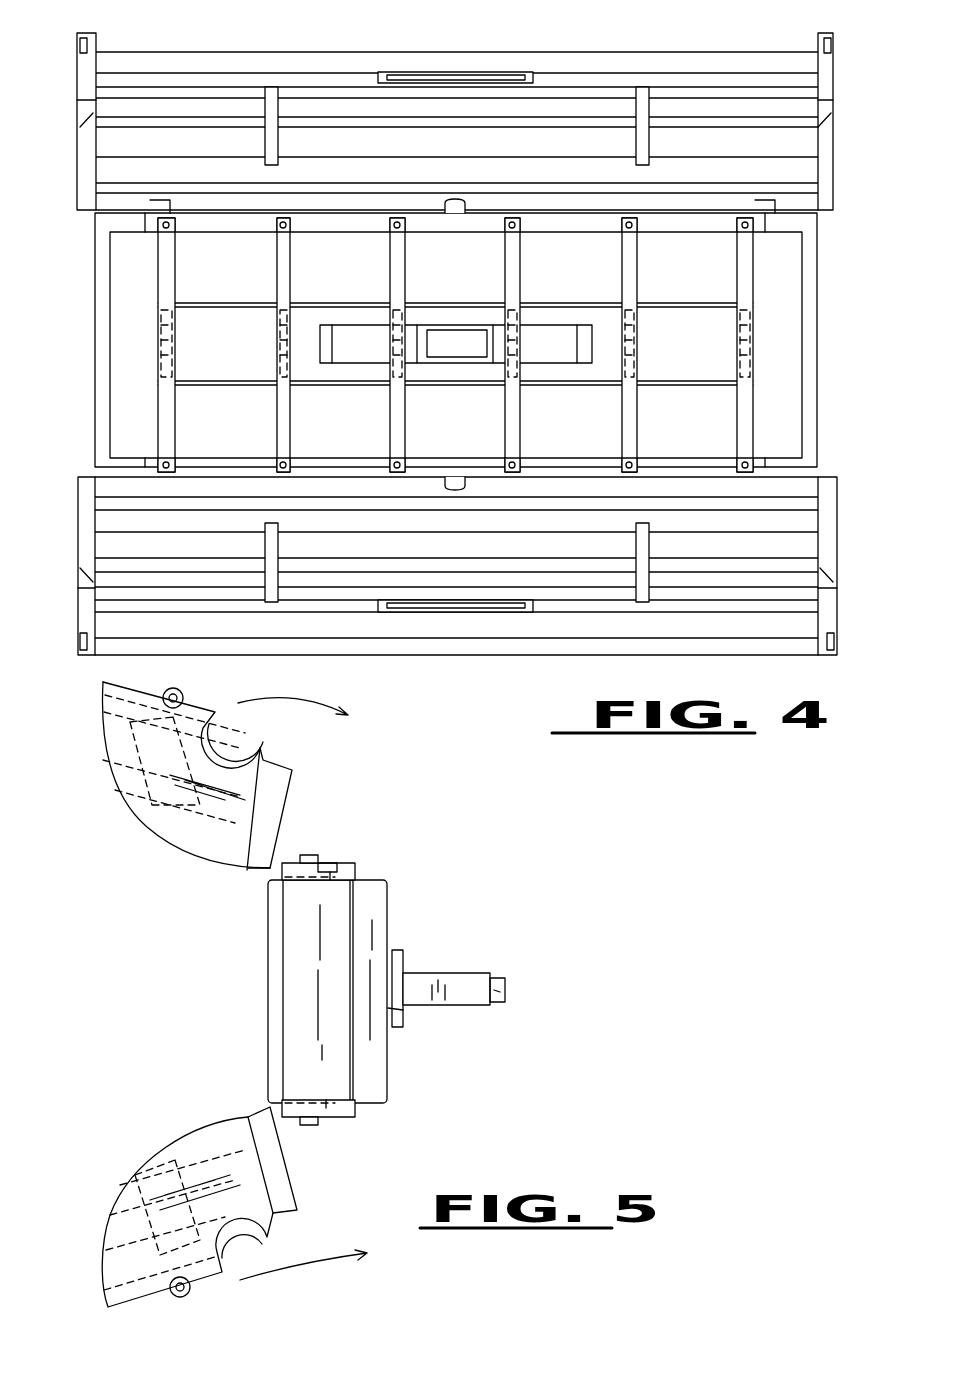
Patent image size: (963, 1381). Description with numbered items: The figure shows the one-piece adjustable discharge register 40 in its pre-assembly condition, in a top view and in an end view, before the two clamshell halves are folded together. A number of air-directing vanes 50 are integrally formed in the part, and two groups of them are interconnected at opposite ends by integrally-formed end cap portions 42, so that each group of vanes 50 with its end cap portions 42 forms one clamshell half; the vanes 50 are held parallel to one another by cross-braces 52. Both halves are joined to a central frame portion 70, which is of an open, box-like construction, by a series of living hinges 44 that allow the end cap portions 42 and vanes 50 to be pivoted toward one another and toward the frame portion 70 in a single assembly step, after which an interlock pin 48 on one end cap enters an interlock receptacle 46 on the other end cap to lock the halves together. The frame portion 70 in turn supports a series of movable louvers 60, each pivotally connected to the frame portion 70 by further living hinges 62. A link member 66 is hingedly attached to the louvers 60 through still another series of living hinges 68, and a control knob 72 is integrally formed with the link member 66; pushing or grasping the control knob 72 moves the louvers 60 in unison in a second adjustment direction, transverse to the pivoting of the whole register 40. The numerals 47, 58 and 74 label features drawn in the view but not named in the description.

In FIG. 4, the one-piece adjustable discharge register 40 is at (451, 343).
In FIG. 4, the end cap portion 42 is at (451, 343).
In FIG. 5, the end cap portion 42 is at (166, 799).
In FIG. 4, the living hinge 44 is at (125, 208).
In FIG. 5, the living hinge 44 is at (290, 862).
In FIG. 5, the interlock receptacle 46 is at (183, 695).
In FIG. 4, the end post 47 is at (835, 170).
In FIG. 5, the interlock pin 48 is at (190, 1288).
In FIG. 4, the air-directing vane 50 is at (540, 75).
In FIG. 5, the air-directing vane 50 is at (103, 706).
In FIG. 4, the cross-brace 52 is at (265, 150).
In FIG. 5, the cross-brace 52 is at (130, 742).
In FIG. 4, the handle bracket 58 is at (400, 72).
In FIG. 4, the movable louver 60 is at (160, 272).
In FIG. 5, the movable louver 60 is at (370, 900).
In FIG. 4, the living hinge 62 is at (277, 232).
In FIG. 5, the living hinge 62 is at (340, 862).
In FIG. 4, the link member 66 is at (680, 382).
In FIG. 5, the link member 66 is at (403, 960).
In FIG. 4, the living hinge 68 is at (280, 343).
In FIG. 5, the living hinge 68 is at (403, 1010).
In FIG. 4, the frame portion 70 is at (90, 385).
In FIG. 5, the frame portion 70 is at (296, 992).
In FIG. 4, the control knob 72 is at (457, 352).
In FIG. 5, the control knob 72 is at (462, 987).
In FIG. 4, the locking knob 74 is at (456, 199).
In FIG. 5, the locking knob 74 is at (312, 855).